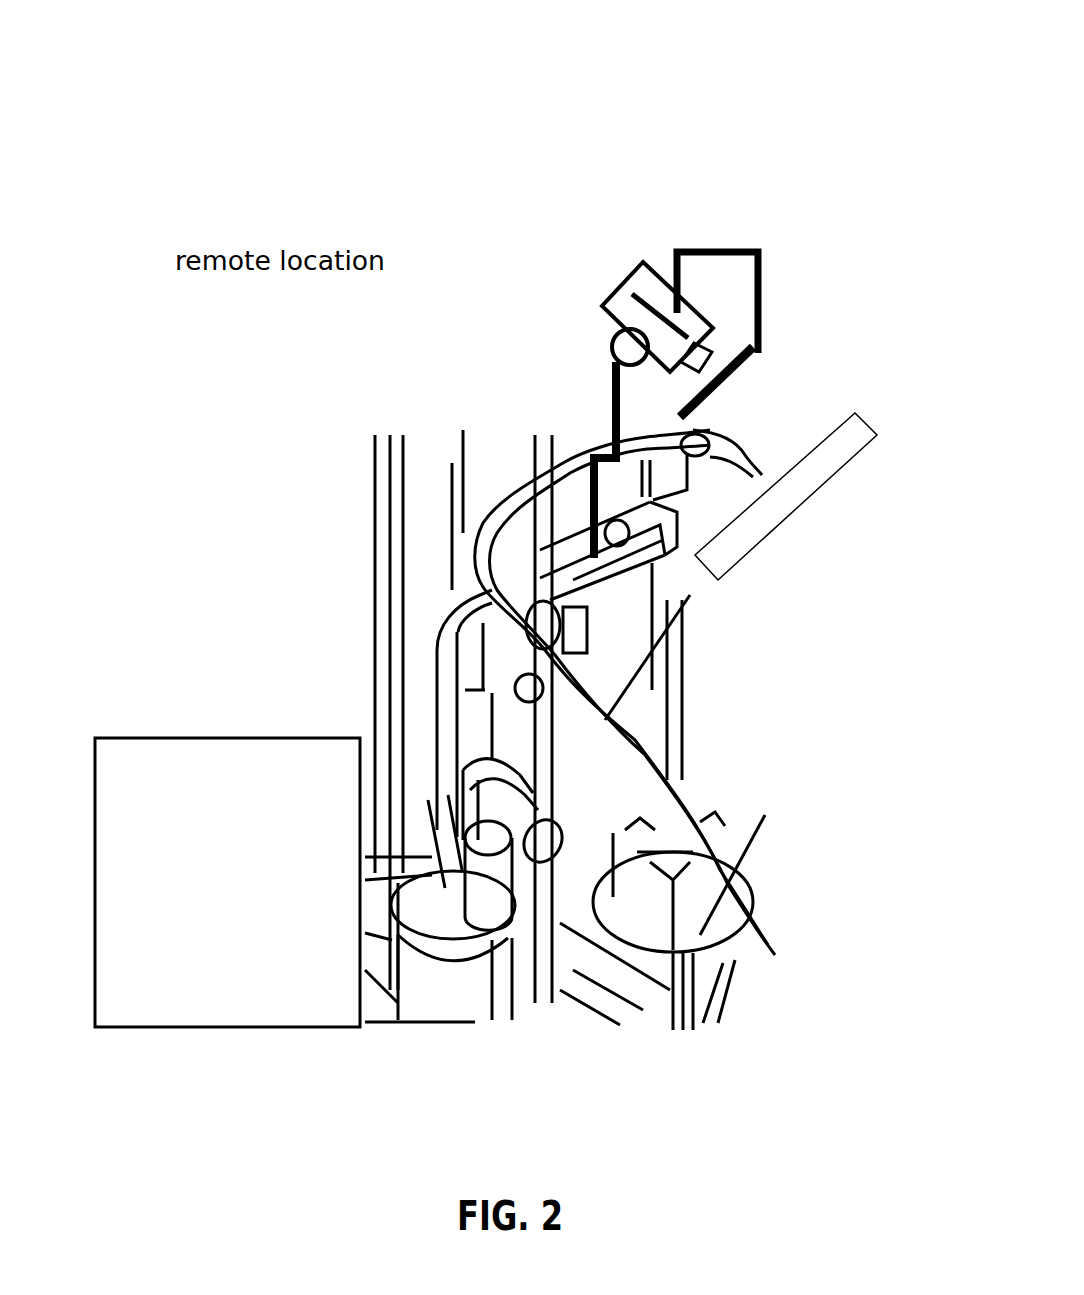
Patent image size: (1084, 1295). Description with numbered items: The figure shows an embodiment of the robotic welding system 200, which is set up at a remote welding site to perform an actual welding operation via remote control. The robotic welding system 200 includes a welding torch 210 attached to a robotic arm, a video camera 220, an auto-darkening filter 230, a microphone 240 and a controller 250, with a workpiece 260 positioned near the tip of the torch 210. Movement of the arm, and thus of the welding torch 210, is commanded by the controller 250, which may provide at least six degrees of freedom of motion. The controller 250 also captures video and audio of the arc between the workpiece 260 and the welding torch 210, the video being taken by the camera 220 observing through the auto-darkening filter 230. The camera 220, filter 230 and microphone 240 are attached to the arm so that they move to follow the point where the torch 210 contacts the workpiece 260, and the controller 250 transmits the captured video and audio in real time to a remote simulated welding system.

The robotic welding system 200 is at (158, 111).
The welding torch 210 is at (763, 460).
The video camera 220 is at (630, 273).
The auto-darkening filter 230 is at (737, 377).
The microphone 240 is at (620, 320).
The controller 250 is at (247, 910).
The workpiece 260 is at (877, 433).